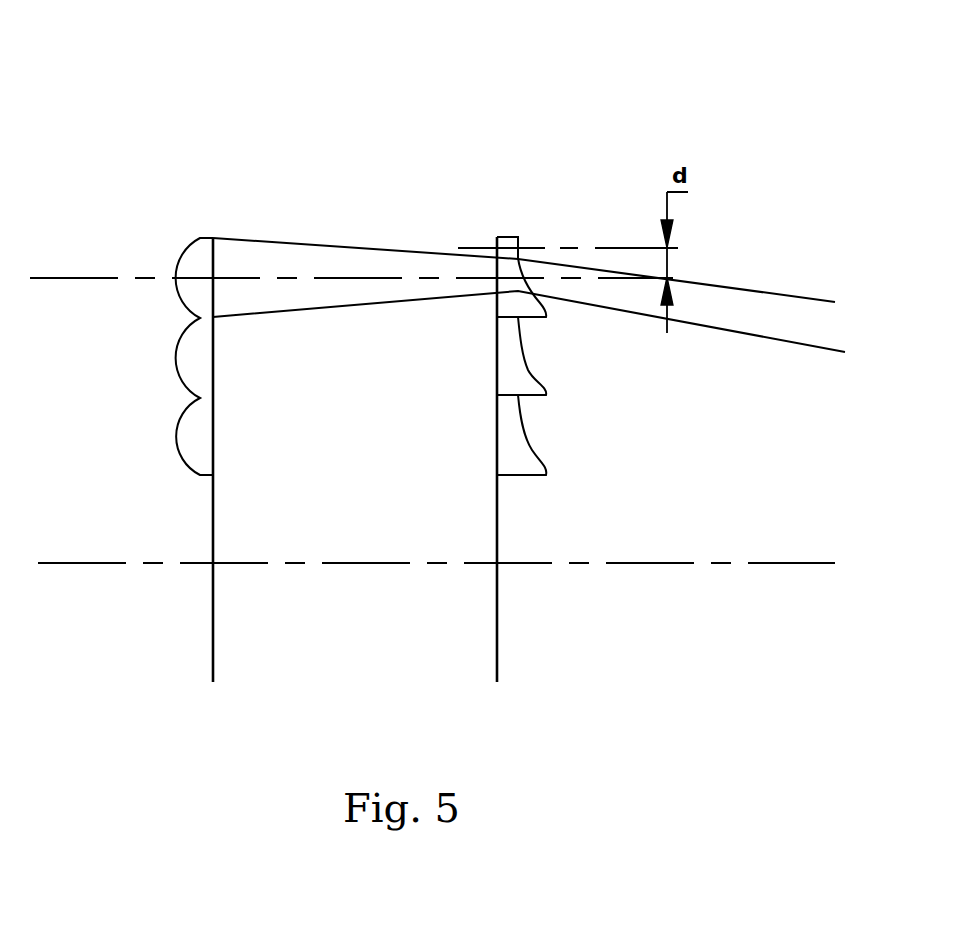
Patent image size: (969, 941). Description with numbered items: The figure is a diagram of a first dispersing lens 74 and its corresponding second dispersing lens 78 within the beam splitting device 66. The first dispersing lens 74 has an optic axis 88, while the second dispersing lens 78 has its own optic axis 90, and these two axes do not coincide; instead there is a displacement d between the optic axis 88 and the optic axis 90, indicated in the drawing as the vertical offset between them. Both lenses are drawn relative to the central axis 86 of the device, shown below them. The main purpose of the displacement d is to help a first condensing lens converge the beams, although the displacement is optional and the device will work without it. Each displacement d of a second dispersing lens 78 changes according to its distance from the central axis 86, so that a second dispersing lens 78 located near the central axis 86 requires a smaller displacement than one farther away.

The beam splitting device 66 is at (438, 85).
The first dispersing lens 74 is at (182, 258).
The second dispersing lens 78 is at (508, 236).
The central axis 86 is at (100, 562).
The optic axis of first dispersing lens 88 is at (88, 277).
The optic axis of second dispersing lens 90 is at (567, 248).